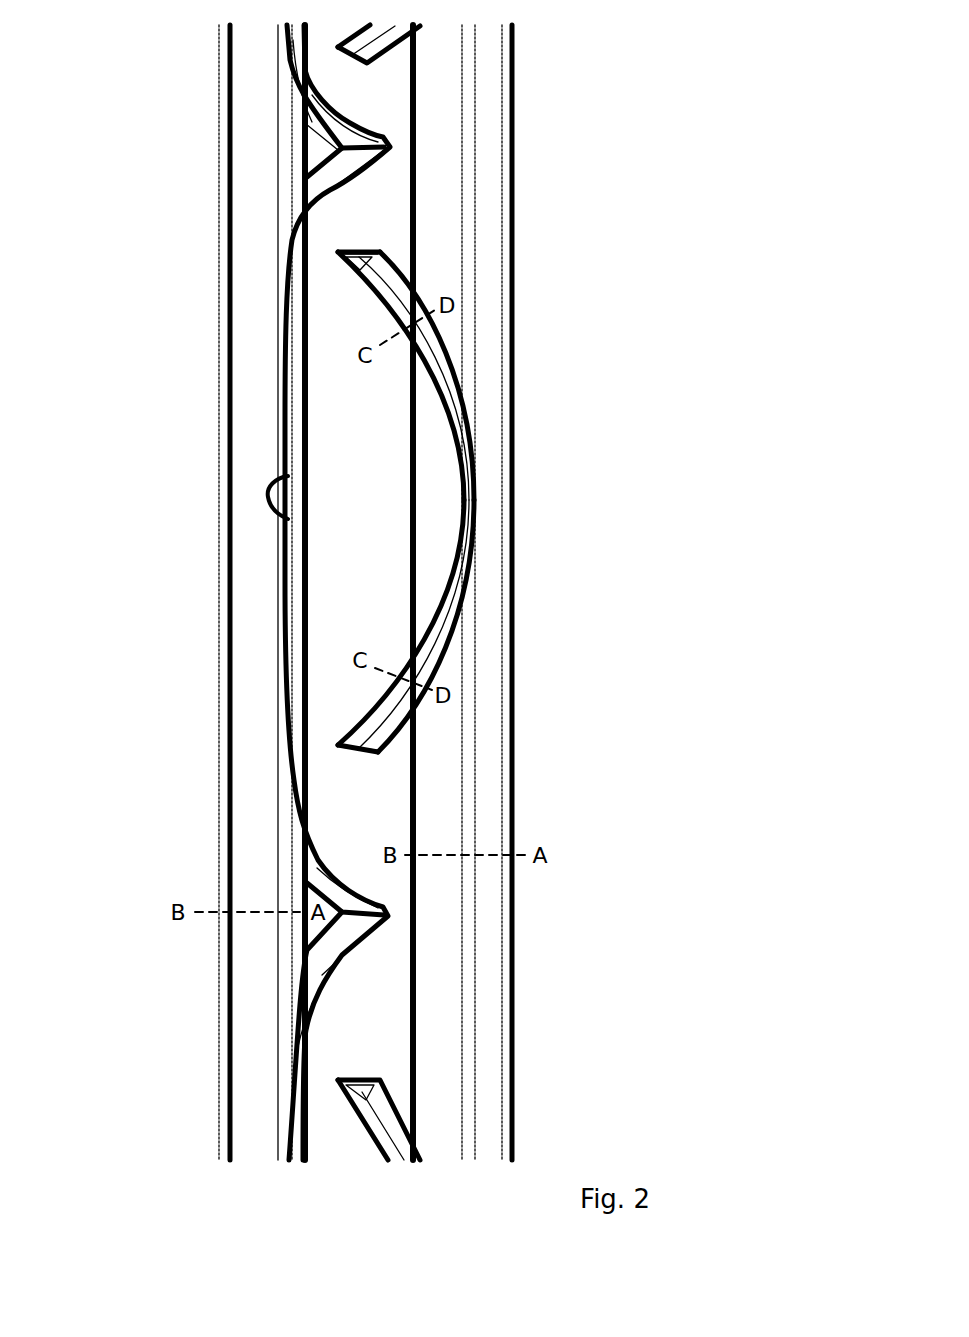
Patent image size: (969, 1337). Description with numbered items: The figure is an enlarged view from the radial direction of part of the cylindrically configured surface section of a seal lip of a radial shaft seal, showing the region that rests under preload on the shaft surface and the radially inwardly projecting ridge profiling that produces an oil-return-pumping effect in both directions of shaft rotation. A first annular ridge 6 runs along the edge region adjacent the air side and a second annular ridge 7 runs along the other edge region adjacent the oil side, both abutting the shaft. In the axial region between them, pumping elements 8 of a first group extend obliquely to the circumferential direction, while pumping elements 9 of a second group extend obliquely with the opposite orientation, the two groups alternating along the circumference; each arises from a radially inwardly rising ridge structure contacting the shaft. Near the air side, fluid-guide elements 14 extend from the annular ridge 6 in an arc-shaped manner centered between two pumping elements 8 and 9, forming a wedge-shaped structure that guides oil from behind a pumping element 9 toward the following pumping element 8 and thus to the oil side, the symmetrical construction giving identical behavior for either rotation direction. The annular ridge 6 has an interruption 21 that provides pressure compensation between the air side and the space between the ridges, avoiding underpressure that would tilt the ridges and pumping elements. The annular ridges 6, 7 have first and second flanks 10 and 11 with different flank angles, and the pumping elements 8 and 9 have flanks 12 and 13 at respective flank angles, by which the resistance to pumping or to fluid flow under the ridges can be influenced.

The first annular ridge 6 is at (283, 867).
The second annular ridge 7 is at (470, 735).
The pumping elements of a first group 8 is at (445, 370).
The pumping elements of a second group 9 is at (385, 35).
The first flank 10 is at (487, 268).
The second flank 11 is at (437, 200).
The flank of pumping element 12 is at (385, 277).
The flank of pumping element 13 is at (380, 311).
The fluid-guide element 14 is at (333, 168).
The interruption 21 is at (272, 495).